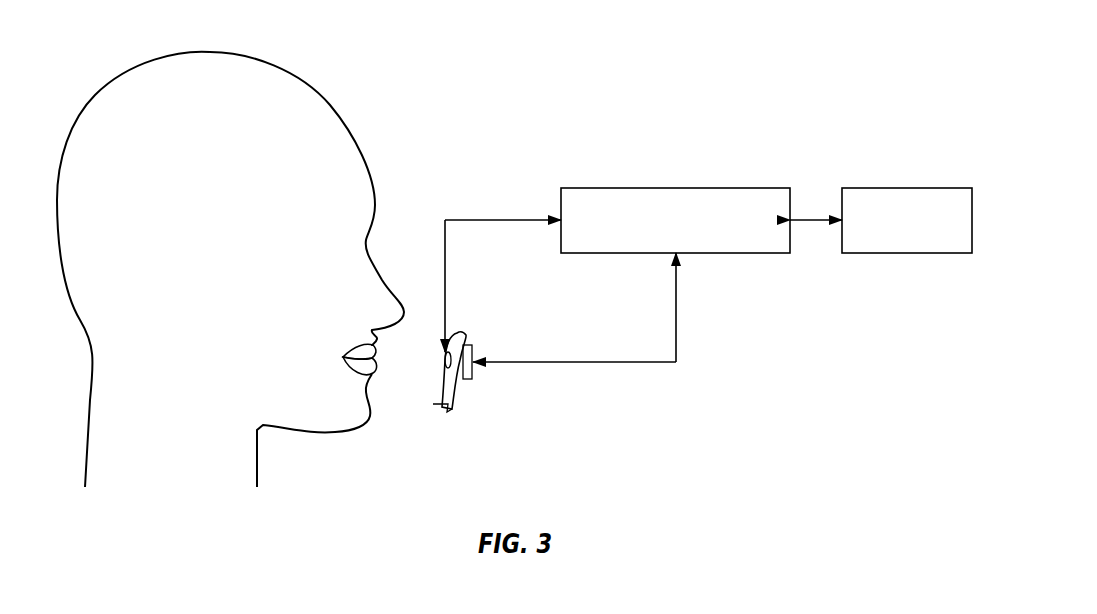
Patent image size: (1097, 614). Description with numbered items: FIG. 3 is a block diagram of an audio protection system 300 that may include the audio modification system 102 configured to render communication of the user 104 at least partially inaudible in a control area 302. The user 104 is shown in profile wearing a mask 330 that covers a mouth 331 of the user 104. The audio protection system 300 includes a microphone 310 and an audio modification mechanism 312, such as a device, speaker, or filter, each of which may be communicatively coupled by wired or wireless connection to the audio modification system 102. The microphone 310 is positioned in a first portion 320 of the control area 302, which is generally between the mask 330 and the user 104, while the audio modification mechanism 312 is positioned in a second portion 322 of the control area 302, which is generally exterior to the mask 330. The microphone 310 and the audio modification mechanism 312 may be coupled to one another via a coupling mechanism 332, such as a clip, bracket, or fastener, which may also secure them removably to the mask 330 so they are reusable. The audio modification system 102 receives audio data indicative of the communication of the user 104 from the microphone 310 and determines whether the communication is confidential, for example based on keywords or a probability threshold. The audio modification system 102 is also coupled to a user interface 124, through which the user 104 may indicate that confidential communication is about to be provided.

The audio protection system 300 is at (557, 32).
The user 104 is at (213, 52).
The mouth 331 is at (342, 338).
The control area 302 is at (435, 448).
The microphone 310 is at (447, 365).
The coupling mechanism 332 is at (463, 340).
The audio modification mechanism 312 is at (472, 368).
The mask 330 is at (453, 402).
The first portion 320 is at (413, 417).
The second portion 322 is at (490, 447).
The audio modification system 102 is at (677, 187).
The user interface 124 is at (908, 187).